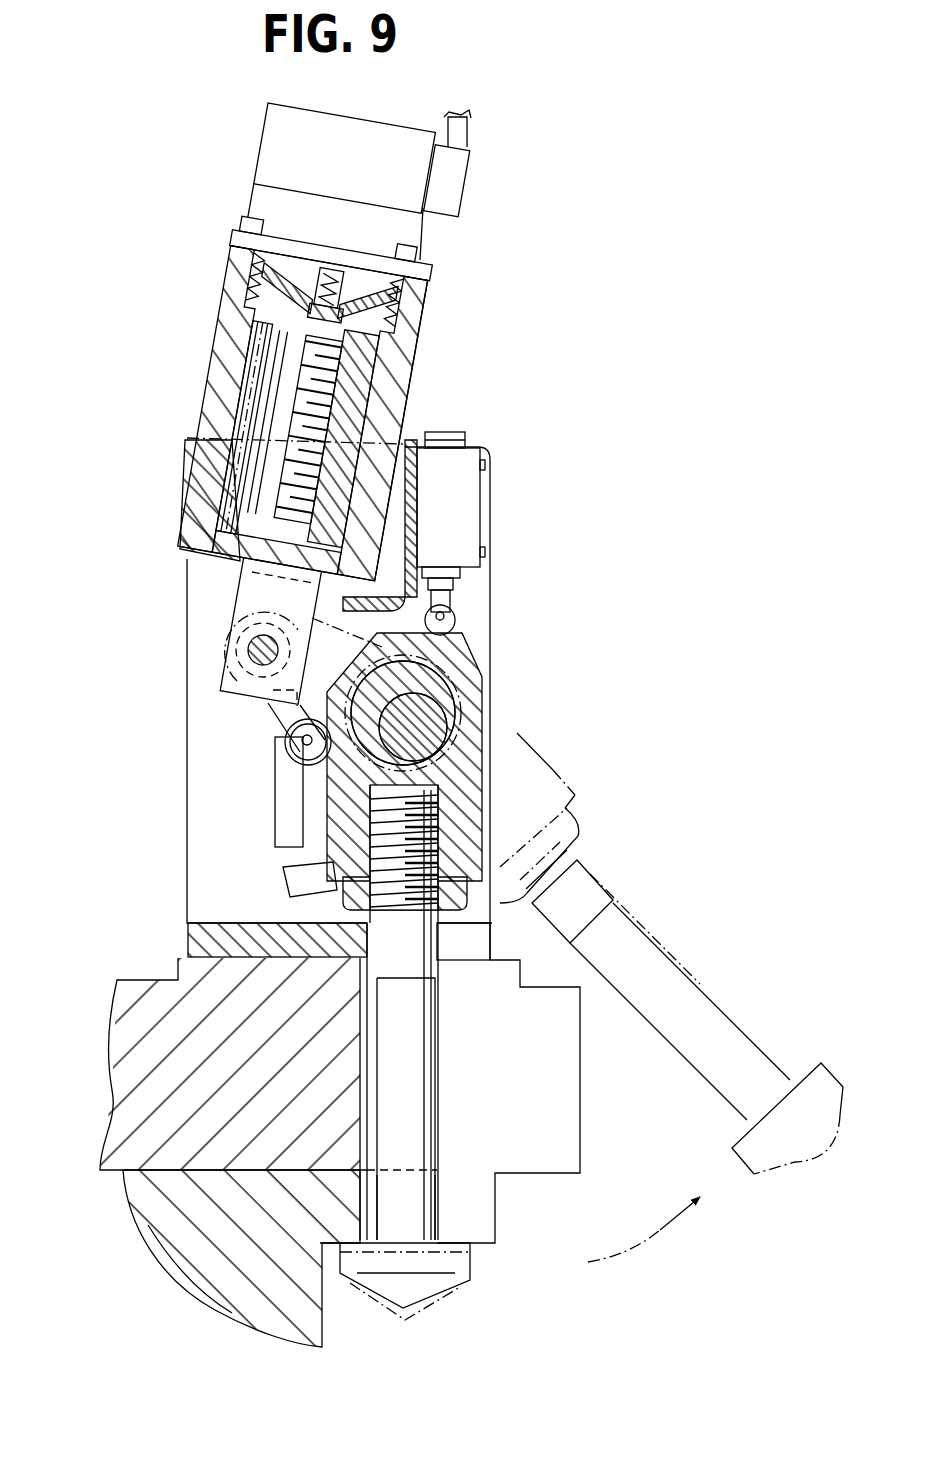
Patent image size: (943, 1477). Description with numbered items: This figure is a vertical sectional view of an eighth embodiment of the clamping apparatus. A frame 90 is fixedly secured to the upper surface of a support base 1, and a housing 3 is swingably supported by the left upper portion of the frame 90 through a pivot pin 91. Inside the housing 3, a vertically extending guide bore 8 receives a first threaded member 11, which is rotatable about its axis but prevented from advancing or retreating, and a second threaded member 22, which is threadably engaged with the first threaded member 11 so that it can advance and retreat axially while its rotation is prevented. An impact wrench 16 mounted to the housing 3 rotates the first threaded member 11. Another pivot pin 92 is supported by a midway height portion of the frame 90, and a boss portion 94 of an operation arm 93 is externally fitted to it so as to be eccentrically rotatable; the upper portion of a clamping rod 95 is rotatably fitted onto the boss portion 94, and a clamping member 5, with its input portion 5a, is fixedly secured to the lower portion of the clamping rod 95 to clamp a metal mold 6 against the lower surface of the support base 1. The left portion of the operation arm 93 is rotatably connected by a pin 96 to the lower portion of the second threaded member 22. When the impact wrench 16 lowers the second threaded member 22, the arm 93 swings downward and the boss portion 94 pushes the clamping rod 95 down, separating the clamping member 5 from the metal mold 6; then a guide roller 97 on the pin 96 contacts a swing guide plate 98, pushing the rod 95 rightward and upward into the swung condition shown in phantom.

The support base 1 is at (125, 1022).
The housing 3 is at (218, 295).
The clamping member 5 is at (453, 1286).
The input portion 5a is at (421, 1222).
The metal mold 6 is at (170, 1230).
The guide bore 8 is at (364, 367).
The first threaded member 11 is at (353, 276).
The impact wrench 16 is at (254, 194).
The second threaded member 22 is at (351, 410).
The frame 90 is at (184, 711).
The pivot pin 91 is at (253, 468).
The another pivot pin 92 is at (434, 720).
The operation arm 93 is at (217, 631).
The boss portion 94 is at (433, 688).
The clamping rod 95 is at (684, 974).
The pin 96 is at (262, 649).
The guide roller 97 is at (291, 752).
The swing guide plate 98 is at (284, 873).